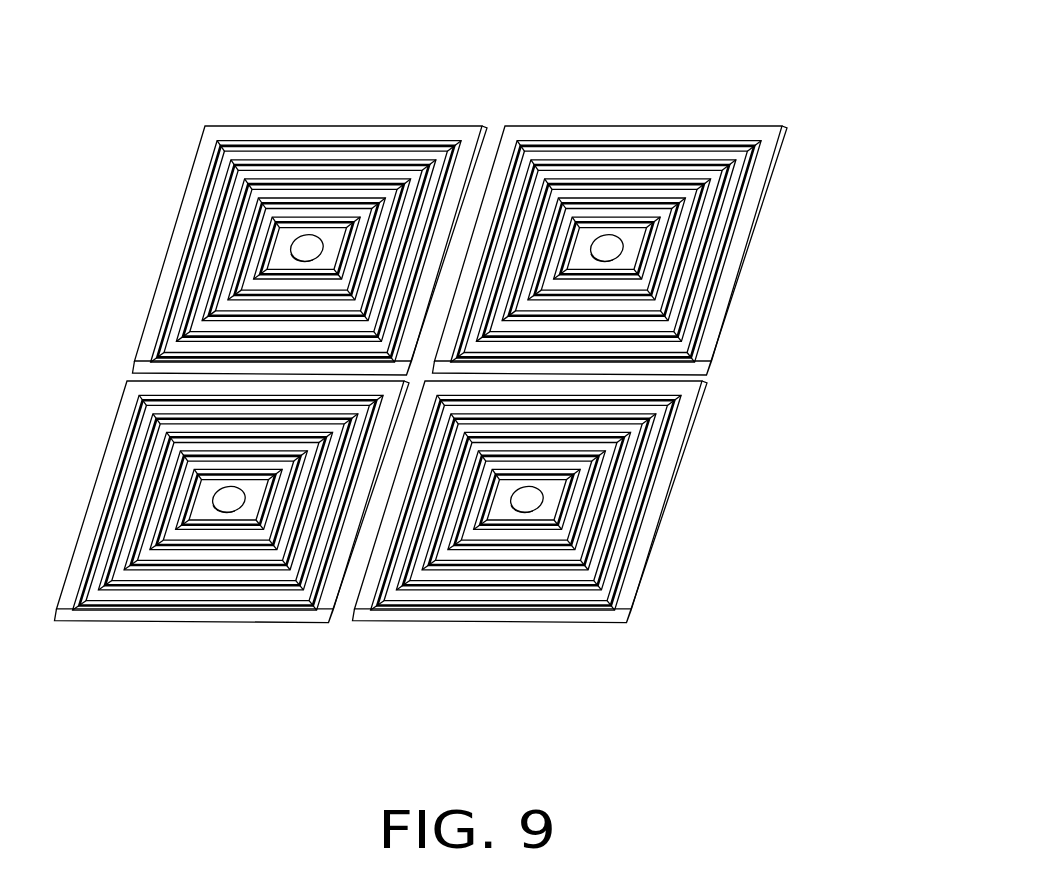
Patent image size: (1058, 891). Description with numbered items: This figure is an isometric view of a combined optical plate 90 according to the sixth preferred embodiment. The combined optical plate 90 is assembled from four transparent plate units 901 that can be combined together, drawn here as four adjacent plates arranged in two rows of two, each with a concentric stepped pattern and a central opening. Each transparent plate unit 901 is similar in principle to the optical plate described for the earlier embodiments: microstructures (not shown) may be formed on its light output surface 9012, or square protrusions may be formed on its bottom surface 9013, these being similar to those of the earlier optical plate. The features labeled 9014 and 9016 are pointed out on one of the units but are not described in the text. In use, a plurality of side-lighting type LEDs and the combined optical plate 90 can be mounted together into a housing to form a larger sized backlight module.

The combined optical plate 90 is at (152, 105).
The transparent plate unit 901 is at (884, 143).
The light output surface 9012 is at (748, 273).
The bottom surface 9013 is at (748, 206).
The through hole 9014 is at (605, 255).
The annular groove 9016 is at (747, 158).